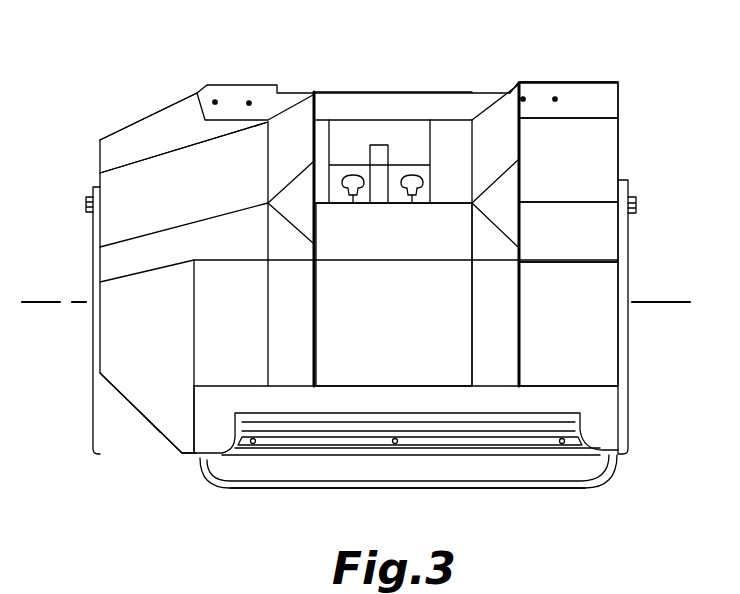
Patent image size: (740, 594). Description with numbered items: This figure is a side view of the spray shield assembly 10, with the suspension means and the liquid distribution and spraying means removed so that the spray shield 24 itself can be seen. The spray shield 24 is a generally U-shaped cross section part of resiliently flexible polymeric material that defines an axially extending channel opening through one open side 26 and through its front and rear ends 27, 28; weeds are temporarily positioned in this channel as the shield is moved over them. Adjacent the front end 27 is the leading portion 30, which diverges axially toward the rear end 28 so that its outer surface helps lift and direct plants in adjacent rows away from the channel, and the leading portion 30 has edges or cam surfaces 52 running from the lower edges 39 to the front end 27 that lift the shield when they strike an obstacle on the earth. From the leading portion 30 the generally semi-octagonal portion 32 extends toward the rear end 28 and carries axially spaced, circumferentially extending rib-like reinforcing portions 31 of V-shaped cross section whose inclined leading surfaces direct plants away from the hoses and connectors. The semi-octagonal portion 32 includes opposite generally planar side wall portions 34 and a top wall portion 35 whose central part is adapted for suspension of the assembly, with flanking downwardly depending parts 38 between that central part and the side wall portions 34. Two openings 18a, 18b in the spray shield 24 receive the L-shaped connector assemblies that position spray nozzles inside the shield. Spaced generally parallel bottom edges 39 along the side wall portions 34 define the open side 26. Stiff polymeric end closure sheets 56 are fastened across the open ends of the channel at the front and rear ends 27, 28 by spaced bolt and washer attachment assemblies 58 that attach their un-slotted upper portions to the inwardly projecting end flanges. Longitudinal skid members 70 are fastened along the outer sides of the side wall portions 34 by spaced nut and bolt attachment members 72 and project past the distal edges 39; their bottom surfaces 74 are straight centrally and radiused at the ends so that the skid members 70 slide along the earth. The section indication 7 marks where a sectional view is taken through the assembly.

The section line 7- 7 is at (22, 330).
The spray shield assembly 10 is at (626, 70).
The opening 18a is at (352, 193).
The opening 18b is at (412, 193).
The spray shield 24 is at (562, 68).
The open side 26 is at (175, 455).
The front end 27 is at (96, 158).
The rear end 28 is at (621, 110).
The leading portion 30 is at (148, 395).
The rib-like reinforcing portion 31 is at (487, 311).
The semi-octagonal portion 32 is at (597, 227).
The side wall portion 34 is at (603, 353).
The top wall portion 35 is at (400, 92).
The downwardly depending part 38 is at (597, 163).
The bottom edge 39 is at (191, 456).
The cam surface 52 is at (122, 402).
The end closure sheet 56 is at (93, 394).
The bolt and washer attachment assembly 58 is at (86, 206).
The skid member 70 is at (575, 475).
The nut and bolt attachment member 72 is at (394, 444).
The bottom surface 74 is at (548, 493).